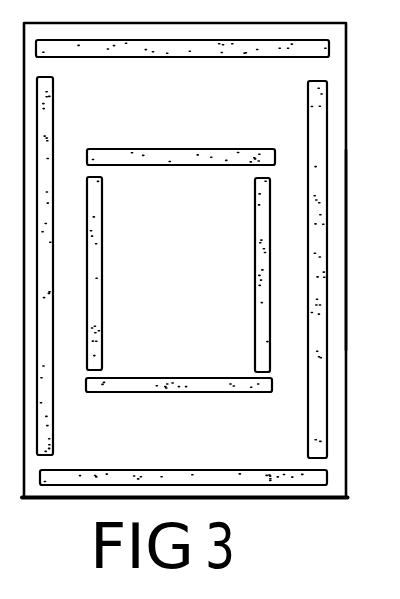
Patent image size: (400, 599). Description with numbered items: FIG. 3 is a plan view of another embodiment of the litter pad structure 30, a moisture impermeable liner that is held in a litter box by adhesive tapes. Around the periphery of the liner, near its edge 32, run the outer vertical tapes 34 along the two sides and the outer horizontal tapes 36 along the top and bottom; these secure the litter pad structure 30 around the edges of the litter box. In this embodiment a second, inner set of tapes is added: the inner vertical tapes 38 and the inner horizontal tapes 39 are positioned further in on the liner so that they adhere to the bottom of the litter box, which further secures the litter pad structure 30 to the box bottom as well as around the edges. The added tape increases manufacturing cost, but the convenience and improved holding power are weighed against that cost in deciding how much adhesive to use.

The litter pad structure 30 is at (347, 133).
The frame side member 32 is at (337, 250).
The outer vertical tapes 34 is at (310, 96).
The outer horizontal tapes 36 is at (251, 447).
The inner vertical tapes 38 is at (260, 263).
The inner horizontal tapes 39 is at (214, 384).